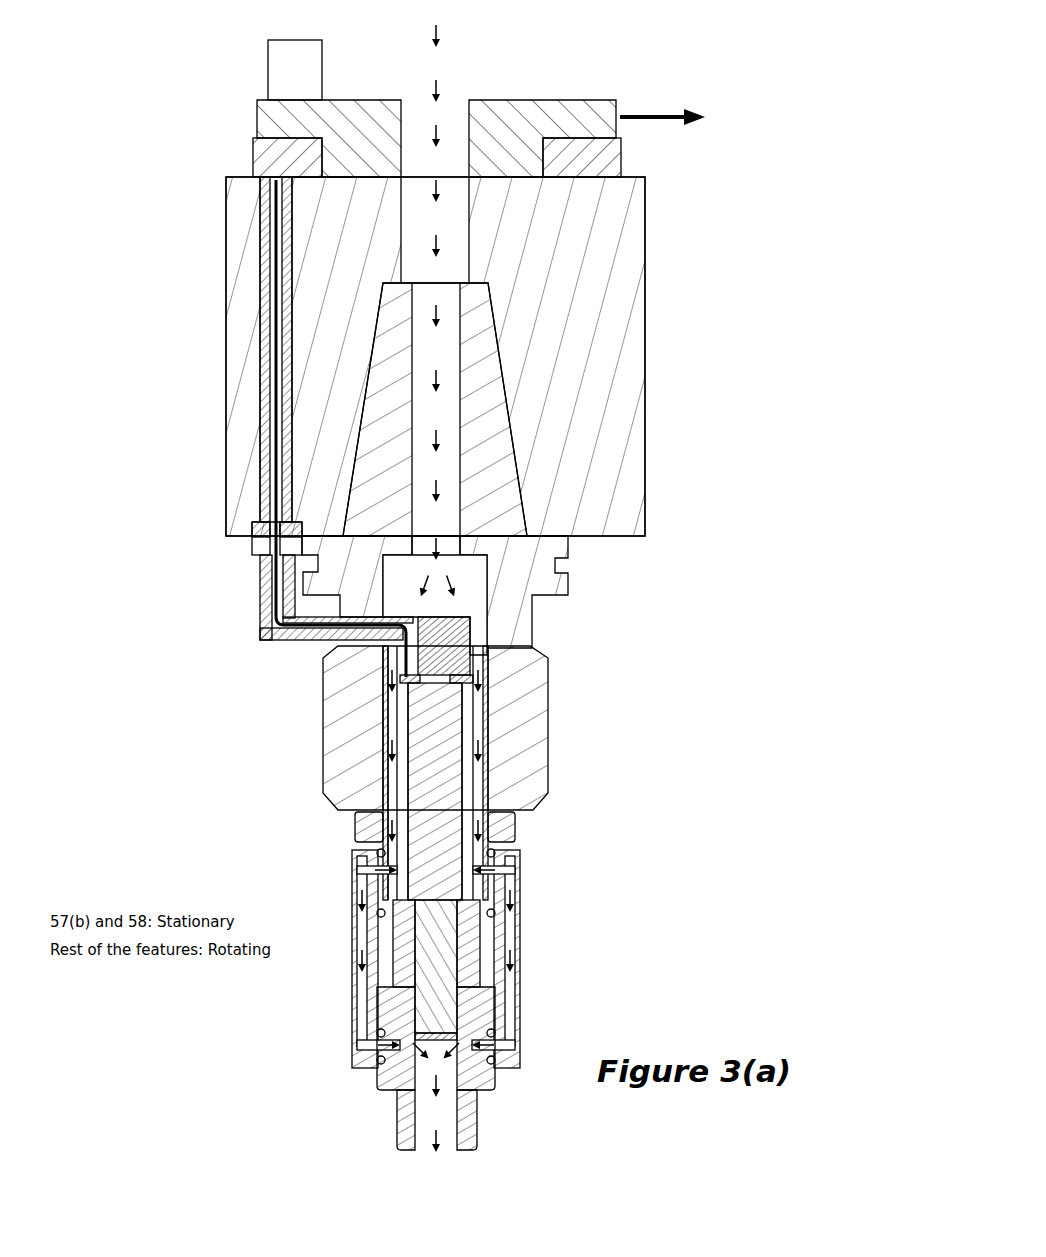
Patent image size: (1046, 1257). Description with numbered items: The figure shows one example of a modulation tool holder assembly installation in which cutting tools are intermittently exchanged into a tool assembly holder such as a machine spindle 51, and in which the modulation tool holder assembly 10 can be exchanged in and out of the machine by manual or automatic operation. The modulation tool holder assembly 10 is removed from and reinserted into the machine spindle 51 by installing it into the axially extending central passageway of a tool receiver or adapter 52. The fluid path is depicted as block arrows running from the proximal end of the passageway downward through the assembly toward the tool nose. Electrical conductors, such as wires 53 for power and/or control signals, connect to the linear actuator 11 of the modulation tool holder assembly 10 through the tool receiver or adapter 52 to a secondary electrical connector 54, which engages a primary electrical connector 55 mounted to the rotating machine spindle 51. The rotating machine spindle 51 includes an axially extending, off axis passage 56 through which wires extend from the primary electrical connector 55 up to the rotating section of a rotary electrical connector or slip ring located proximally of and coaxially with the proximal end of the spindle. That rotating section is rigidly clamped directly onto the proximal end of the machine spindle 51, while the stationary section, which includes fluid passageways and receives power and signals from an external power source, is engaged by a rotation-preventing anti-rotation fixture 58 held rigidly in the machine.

The anti-rotation fixture 58 is at (290, 73).
The machine spindle 51 is at (597, 415).
The off axis passage 56 is at (267, 312).
The primary electrical connector 55 is at (253, 520).
The secondary electrical connector 54 is at (263, 592).
The wires 53 is at (405, 657).
The tool receiver or adapter 52 is at (518, 690).
The linear actuator 11 is at (440, 852).
The modulation tool holder assembly 10 is at (326, 1010).